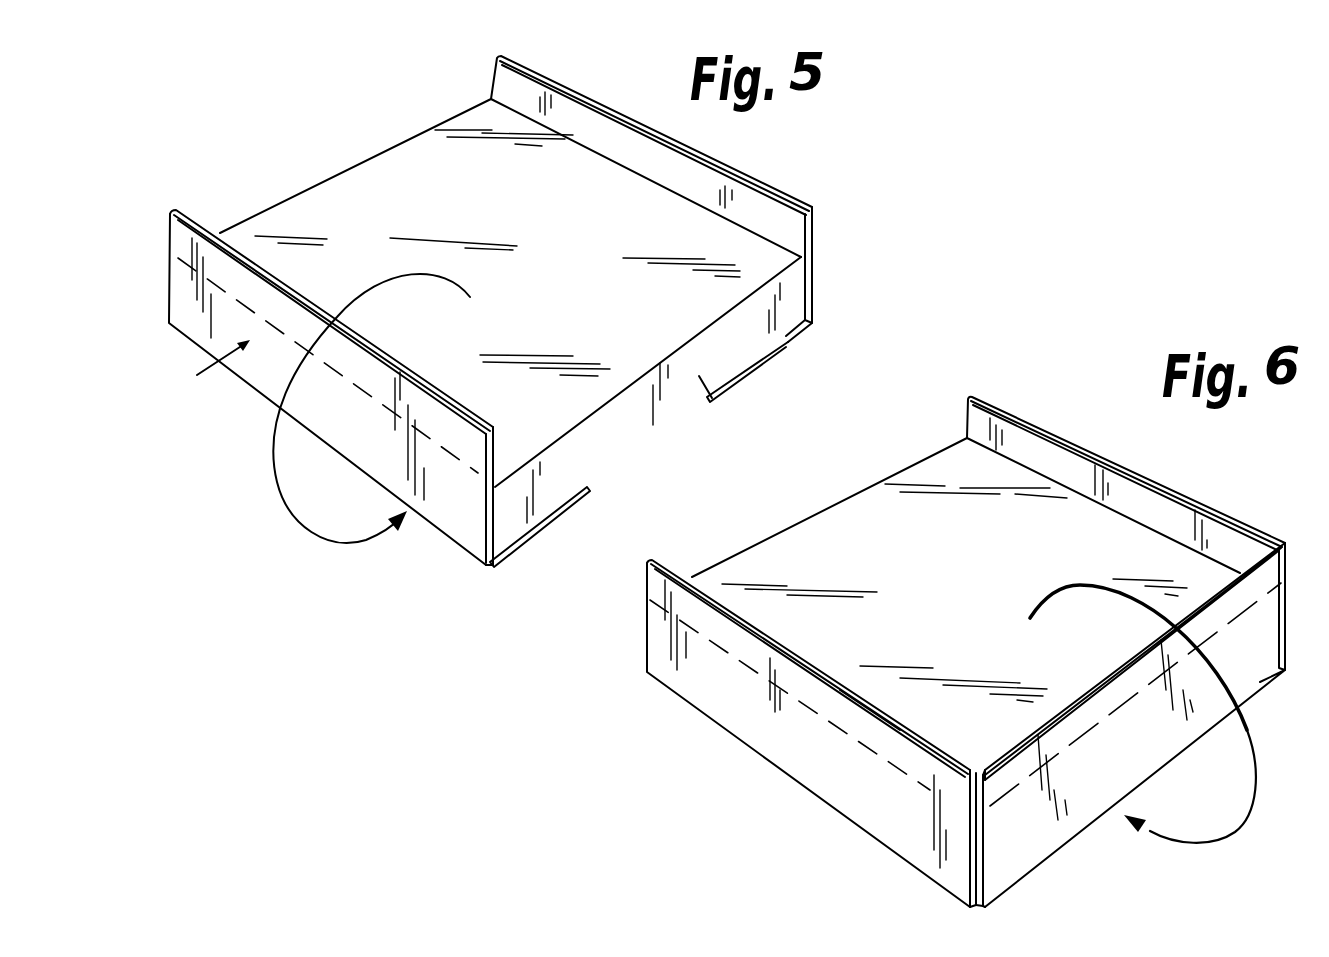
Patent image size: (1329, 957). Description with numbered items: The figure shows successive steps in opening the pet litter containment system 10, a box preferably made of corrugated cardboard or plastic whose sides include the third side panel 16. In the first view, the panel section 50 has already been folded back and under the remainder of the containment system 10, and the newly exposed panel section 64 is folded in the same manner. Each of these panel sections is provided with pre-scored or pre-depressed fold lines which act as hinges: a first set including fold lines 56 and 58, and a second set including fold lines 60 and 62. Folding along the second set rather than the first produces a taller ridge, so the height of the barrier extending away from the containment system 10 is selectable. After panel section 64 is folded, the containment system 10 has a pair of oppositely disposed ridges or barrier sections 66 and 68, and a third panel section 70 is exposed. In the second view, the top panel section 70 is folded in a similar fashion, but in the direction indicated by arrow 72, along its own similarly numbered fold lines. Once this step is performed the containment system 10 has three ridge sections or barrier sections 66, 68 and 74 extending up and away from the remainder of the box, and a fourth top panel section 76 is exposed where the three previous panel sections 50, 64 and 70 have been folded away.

In FIG. 5, the pet litter containment system 10 is at (352, 111).
In FIG. 6, the pet litter containment system 10 is at (1228, 465).
In FIG. 5, the third side panel 16 is at (712, 381).
In FIG. 5, the panel section 50 is at (818, 217).
In FIG. 5, the fold line 56 is at (765, 183).
In FIG. 6, the fold line 56 is at (1231, 520).
In FIG. 5, the fold line 58 is at (814, 325).
In FIG. 5, the fold line 60 is at (809, 253).
In FIG. 6, the fold line 60 is at (760, 674).
In FIG. 5, the fold line 62 is at (774, 349).
In FIG. 5, the panel section 64 is at (214, 374).
In FIG. 5, the ridge or barrier section 66 is at (474, 413).
In FIG. 6, the ridge or barrier section 66 is at (888, 706).
In FIG. 5, the ridge or barrier section 68 is at (598, 124).
In FIG. 6, the ridge or barrier section 68 is at (1078, 461).
In FIG. 5, the third panel section 70 is at (578, 246).
In FIG. 6, the third panel section 70 is at (1287, 617).
In FIG. 6, the arrow 72 is at (1212, 667).
In FIG. 6, the ridge or barrier section 74 is at (1125, 662).
In FIG. 6, the fourth top panel section 76 is at (990, 603).